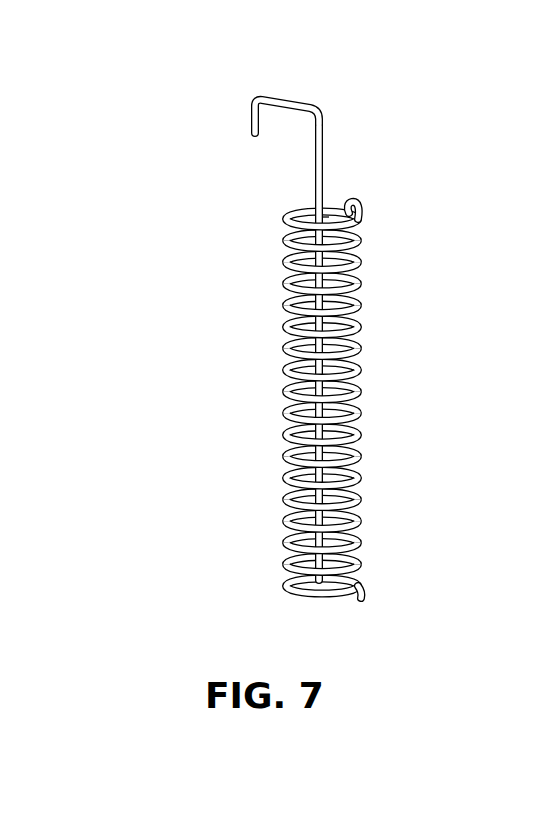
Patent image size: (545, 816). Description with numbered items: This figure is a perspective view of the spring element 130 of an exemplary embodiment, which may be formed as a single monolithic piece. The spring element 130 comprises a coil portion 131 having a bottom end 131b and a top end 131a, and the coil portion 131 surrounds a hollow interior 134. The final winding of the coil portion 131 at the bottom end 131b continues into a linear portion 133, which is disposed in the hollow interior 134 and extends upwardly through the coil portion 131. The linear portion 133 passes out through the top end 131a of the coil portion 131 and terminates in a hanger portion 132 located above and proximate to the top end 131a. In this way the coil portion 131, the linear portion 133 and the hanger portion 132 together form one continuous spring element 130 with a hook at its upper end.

The spring element 130 is at (218, 348).
The coil portion 131 is at (347, 385).
The top end 131a is at (364, 211).
The bottom end 131b is at (360, 596).
The hanger portion 132 is at (238, 108).
The linear portion 133 is at (297, 535).
The hollow interior 134 is at (333, 217).